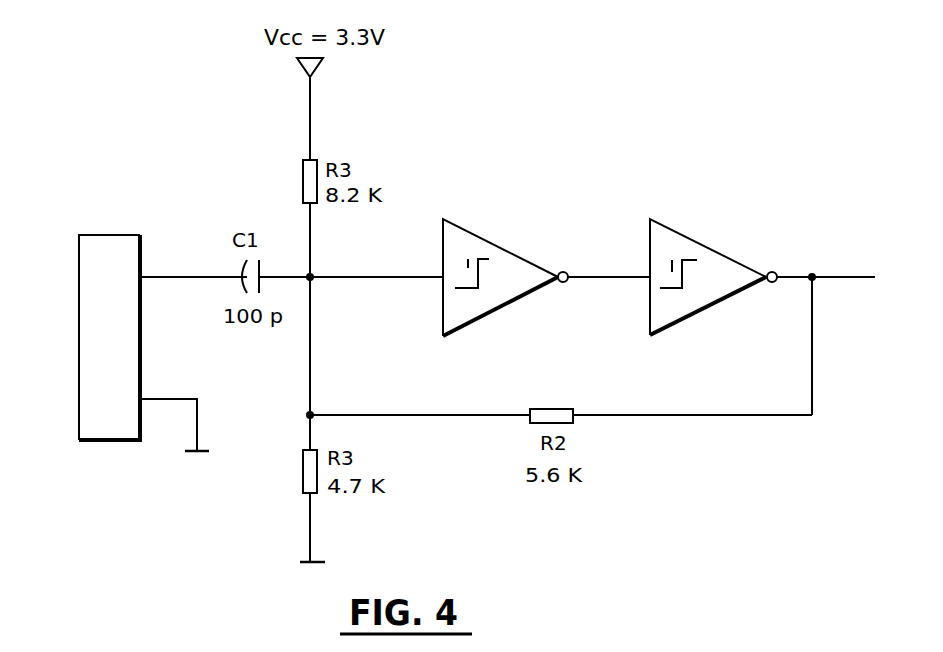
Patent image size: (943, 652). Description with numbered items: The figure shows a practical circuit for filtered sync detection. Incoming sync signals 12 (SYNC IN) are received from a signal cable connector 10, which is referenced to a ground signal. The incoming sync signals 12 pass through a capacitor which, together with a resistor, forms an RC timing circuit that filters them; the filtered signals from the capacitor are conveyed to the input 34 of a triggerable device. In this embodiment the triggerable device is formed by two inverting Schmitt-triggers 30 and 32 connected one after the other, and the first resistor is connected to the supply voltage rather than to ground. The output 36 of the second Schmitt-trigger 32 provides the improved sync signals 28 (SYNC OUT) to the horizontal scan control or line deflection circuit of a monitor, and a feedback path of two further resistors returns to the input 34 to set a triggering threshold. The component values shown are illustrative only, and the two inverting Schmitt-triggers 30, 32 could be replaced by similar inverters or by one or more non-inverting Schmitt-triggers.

The signal cable connector 10 is at (93, 273).
The incoming sync signals 12 is at (165, 275).
The improved sync signals 28 is at (868, 275).
The inverting Schmitt-trigger 30 is at (497, 253).
The inverting Schmitt-trigger 32 is at (657, 230).
The input of the triggerable device 34 is at (443, 275).
The output of Schmitt-trigger 36 is at (766, 275).